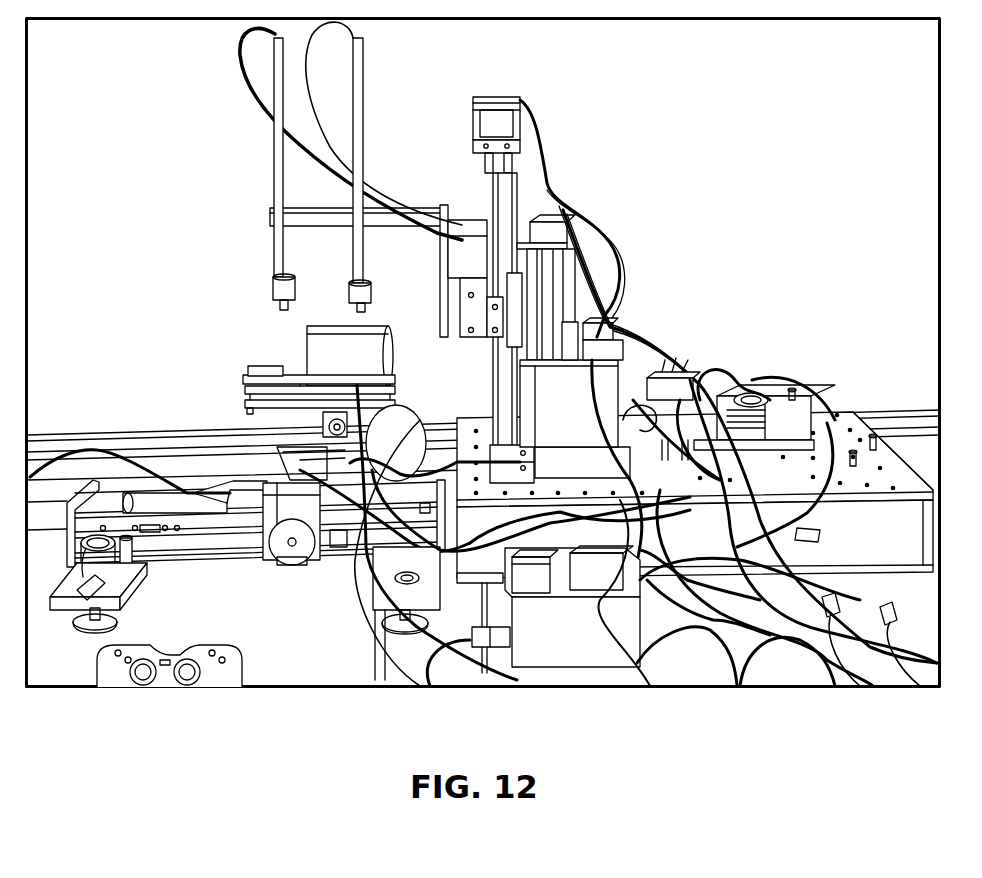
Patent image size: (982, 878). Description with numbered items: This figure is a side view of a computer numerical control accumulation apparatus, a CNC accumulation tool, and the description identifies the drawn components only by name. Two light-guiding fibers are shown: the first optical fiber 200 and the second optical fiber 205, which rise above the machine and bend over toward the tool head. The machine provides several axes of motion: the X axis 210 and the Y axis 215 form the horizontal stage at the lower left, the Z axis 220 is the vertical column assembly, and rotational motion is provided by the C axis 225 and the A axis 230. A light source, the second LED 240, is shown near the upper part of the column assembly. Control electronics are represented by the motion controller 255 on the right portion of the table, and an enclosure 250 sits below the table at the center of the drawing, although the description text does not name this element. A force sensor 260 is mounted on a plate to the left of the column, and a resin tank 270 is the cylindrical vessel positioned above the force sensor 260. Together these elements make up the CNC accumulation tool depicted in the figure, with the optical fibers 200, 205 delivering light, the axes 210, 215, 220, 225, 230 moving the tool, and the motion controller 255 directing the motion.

The optical fiber no. 1 200 is at (230, 63).
The optical fiber no. 2 205 is at (314, 68).
The X axis 210 is at (57, 475).
The Y axis 215 is at (290, 555).
The Z axis 220 is at (524, 176).
The C axis 225 is at (358, 420).
The A axis 230 is at (464, 208).
The LED no. 2 240 is at (572, 215).
The controller 250 is at (539, 594).
The motion controller 255 is at (775, 392).
The force sensor 260 is at (228, 370).
The resin tank 270 is at (300, 348).